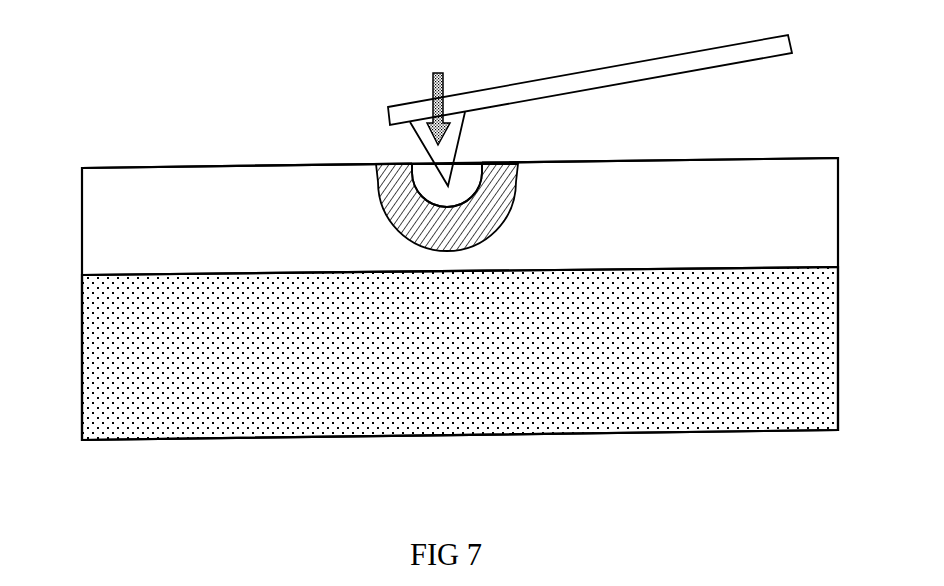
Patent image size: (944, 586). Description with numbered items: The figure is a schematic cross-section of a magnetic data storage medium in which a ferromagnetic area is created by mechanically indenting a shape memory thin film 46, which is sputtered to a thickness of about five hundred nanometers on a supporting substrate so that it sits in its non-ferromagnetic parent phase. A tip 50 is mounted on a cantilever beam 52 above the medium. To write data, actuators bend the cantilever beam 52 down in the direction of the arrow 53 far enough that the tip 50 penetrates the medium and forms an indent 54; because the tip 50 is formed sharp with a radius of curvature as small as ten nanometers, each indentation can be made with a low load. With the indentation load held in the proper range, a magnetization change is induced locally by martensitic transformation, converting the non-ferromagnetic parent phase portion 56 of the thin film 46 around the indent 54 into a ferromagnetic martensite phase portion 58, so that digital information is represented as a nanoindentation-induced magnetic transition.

The shape memory thin film 46 is at (82, 240).
The tip 50 is at (412, 135).
The cantilever beam 52 is at (551, 77).
The arrow 53 is at (432, 80).
The indent 54 is at (477, 178).
The non-ferromagnetic parent phase portion 56 is at (131, 196).
The ferromagnetic martensite phase portion 58 is at (507, 178).